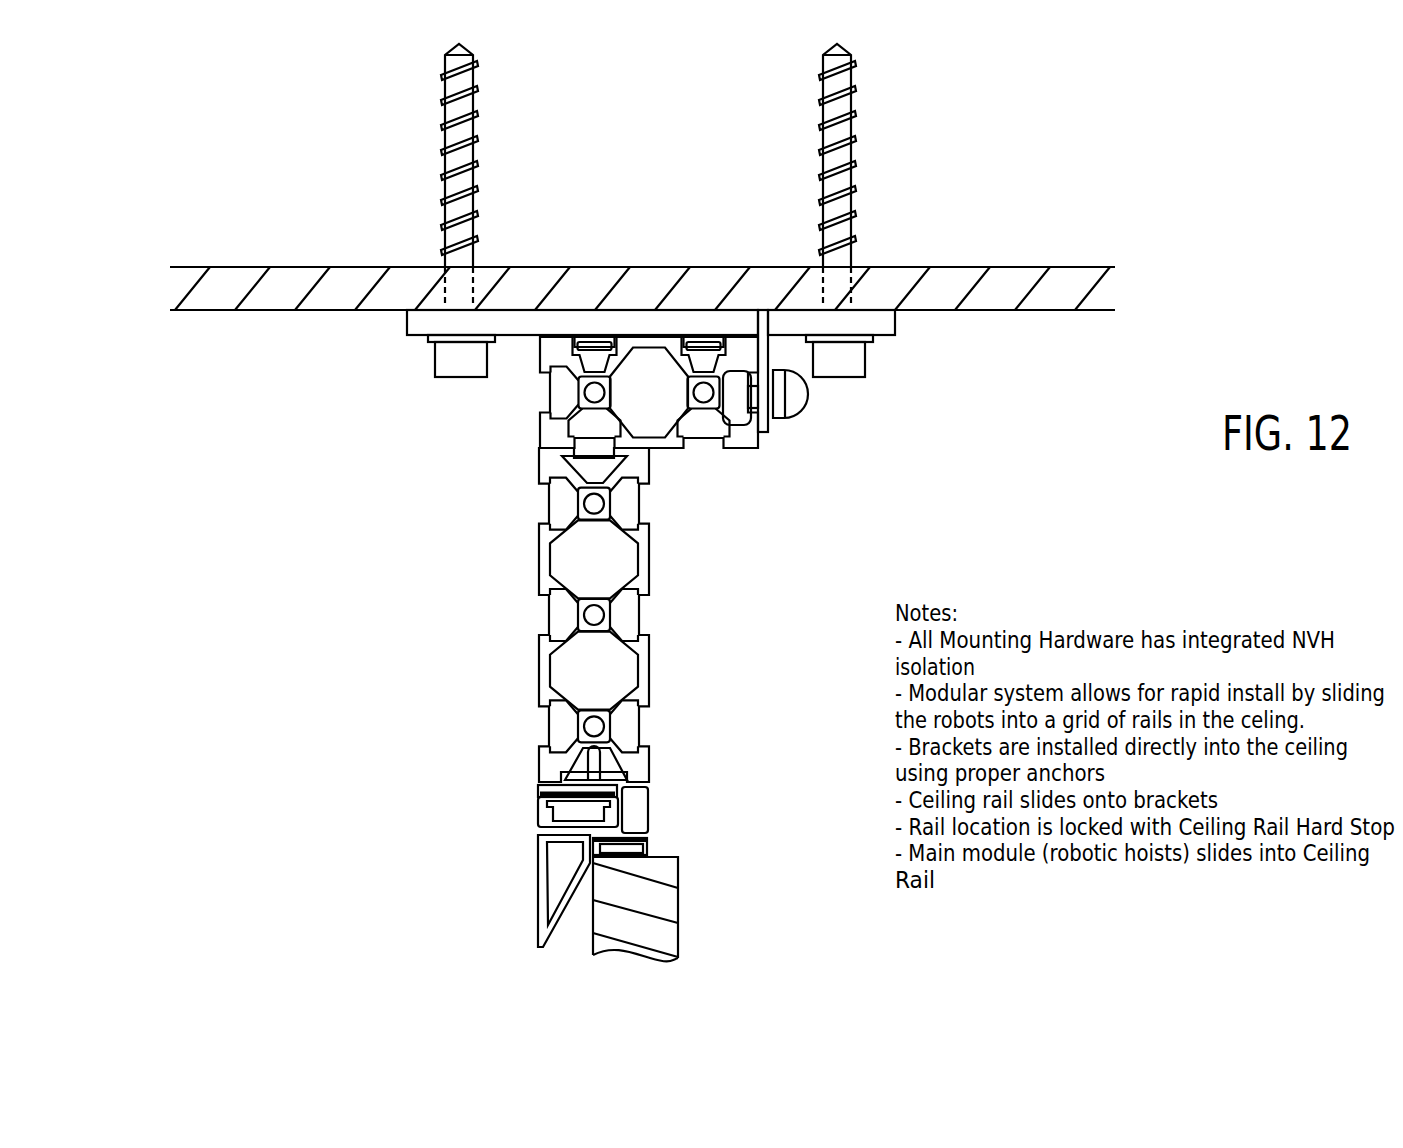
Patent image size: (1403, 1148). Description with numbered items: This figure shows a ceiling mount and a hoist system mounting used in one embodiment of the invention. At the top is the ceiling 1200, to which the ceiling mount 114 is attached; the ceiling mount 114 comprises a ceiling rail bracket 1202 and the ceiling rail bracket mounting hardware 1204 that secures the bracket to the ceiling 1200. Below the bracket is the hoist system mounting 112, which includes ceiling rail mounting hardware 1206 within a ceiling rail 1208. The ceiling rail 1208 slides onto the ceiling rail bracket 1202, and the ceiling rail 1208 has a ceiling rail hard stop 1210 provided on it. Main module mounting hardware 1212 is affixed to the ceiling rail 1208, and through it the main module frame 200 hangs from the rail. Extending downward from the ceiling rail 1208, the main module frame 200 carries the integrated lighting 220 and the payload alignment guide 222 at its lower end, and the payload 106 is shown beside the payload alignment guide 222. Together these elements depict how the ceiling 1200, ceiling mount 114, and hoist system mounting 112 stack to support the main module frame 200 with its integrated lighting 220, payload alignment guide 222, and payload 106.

The ceiling mount 114 is at (263, 171).
The hoist system mounting 112 is at (892, 392).
The ceiling 1200 is at (1020, 267).
The ceiling rail bracket 1202 is at (410, 322).
The ceiling rail bracket mounting hardware 1204 is at (858, 153).
The ceiling rail mounting hardware 1206 is at (540, 368).
The ceiling rail 1208 is at (655, 446).
The ceiling rail hard stop 1210 is at (798, 410).
The main module mounting hardware 1212 is at (567, 484).
The main module frame 200 is at (648, 672).
The integrated lighting 220 is at (538, 800).
The payload alignment guide 222 is at (537, 850).
The payload 106 is at (680, 918).